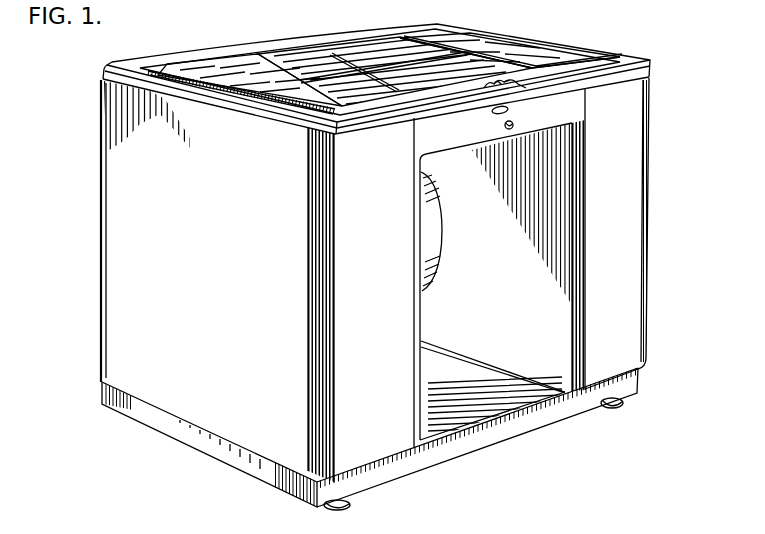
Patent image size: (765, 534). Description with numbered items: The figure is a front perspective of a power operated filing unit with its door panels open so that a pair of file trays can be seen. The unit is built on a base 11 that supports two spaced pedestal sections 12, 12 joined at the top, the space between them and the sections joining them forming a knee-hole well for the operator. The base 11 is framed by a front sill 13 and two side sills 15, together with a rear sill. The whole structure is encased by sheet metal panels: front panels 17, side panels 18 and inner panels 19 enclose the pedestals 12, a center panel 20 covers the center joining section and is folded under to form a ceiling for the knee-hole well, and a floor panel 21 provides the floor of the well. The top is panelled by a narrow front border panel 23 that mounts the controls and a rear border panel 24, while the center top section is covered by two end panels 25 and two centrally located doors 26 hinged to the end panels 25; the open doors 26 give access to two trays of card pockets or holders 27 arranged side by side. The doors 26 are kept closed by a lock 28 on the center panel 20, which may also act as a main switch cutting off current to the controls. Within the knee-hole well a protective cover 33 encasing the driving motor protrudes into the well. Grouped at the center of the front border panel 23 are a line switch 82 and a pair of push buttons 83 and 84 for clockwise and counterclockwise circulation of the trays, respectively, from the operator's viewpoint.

The base 11 is at (575, 417).
The pedestal section 12 is at (95, 254).
The front sill 13 is at (523, 422).
The side sill 15 is at (222, 448).
The front panel 17 is at (626, 172).
The side panel 18 is at (178, 393).
The inner panel 19 is at (500, 337).
The center panel 20 is at (448, 142).
The floor panel 21 is at (447, 410).
The front border panel 23 is at (391, 110).
The rear border panel 24 is at (289, 47).
The end panel 25 is at (158, 78).
The door 26 is at (233, 62).
The tray of card pockets 27 is at (380, 55).
The lock 28 is at (514, 124).
The protective cover 33 is at (434, 237).
The line switch 82 is at (495, 83).
The push button 83 is at (508, 80).
The push button 84 is at (490, 87).